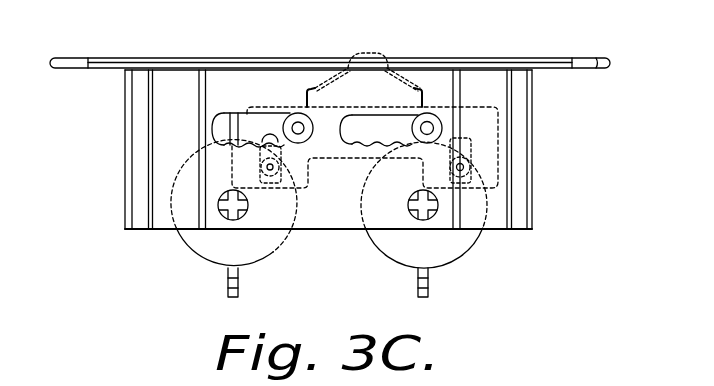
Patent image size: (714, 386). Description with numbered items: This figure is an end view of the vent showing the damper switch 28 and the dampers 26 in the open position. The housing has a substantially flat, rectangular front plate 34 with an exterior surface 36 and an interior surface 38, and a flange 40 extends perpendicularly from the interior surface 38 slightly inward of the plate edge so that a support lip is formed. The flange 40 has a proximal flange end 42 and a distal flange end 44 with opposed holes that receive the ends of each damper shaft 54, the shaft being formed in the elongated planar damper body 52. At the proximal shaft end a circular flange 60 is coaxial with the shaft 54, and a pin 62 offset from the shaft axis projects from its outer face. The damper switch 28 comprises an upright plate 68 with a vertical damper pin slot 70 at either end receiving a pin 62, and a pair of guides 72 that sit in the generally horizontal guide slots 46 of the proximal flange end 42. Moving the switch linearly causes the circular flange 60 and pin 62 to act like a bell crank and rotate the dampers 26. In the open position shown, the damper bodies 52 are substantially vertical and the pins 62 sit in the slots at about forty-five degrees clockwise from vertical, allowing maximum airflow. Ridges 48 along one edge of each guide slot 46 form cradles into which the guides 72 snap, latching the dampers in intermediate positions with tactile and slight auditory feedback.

The damper 26 is at (188, 245).
The damper switch 28 is at (497, 107).
The front plate 34 is at (64, 59).
The exterior surface 36 is at (508, 58).
The interior surface 38 is at (586, 69).
The flange 40 is at (533, 200).
The proximal flange end 42 is at (157, 222).
The distal flange end 44 is at (222, 192).
The guide slots 46 is at (215, 116).
The ridges 48 is at (238, 113).
The damper body 52 is at (228, 288).
The damper shaft 54 is at (247, 207).
The circular flange 60 is at (453, 250).
The pin 62 is at (312, 212).
The upright plate 68 is at (258, 125).
The damper pin slot 70 is at (474, 149).
The guides 72 is at (424, 115).